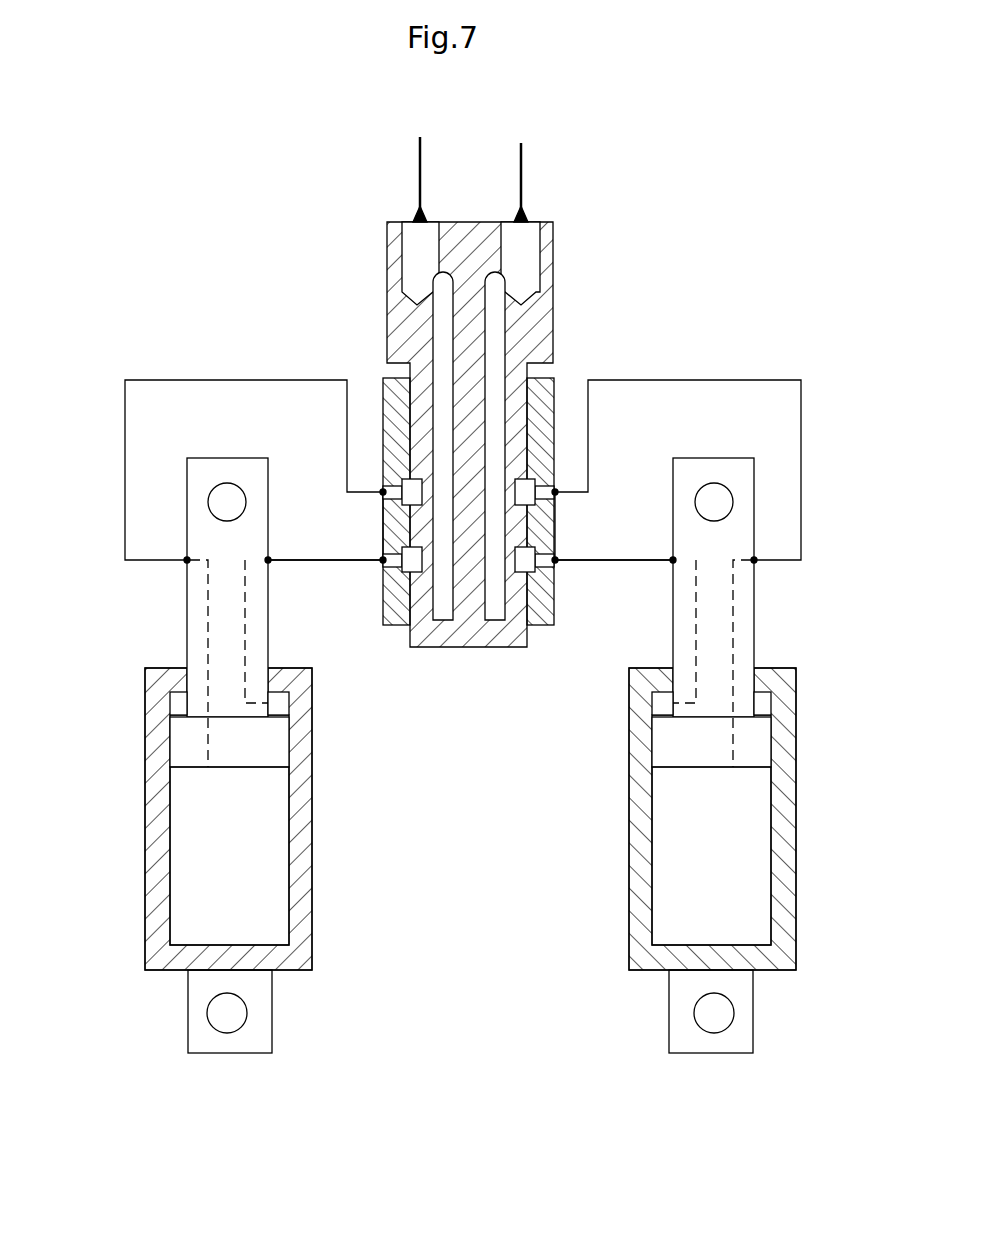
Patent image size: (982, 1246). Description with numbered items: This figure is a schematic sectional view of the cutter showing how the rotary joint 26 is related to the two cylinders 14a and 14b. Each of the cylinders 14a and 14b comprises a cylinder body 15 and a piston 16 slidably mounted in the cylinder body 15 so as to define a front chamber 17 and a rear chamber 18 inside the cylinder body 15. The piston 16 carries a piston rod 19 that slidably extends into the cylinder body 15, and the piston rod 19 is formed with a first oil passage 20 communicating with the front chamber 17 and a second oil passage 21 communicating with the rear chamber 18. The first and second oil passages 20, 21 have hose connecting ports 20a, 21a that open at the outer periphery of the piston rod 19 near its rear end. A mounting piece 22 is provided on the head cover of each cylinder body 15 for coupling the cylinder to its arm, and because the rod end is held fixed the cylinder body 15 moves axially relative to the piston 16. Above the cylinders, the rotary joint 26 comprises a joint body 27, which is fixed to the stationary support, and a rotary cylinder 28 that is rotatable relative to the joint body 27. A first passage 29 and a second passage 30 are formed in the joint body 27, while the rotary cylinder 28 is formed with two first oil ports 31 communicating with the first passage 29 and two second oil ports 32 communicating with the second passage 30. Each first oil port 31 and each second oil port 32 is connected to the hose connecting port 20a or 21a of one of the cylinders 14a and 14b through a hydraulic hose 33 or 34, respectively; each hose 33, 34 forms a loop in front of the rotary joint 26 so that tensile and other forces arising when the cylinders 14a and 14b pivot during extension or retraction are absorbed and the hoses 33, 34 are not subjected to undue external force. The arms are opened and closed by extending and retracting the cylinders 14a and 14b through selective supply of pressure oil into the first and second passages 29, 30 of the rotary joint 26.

The cylinder 14a is at (145, 800).
The cylinder 14b is at (632, 800).
The cylinder body 15 is at (157, 843).
The piston 16 is at (277, 745).
The front chamber 17 is at (185, 893).
The rear chamber 18 is at (183, 703).
The piston rod 19 is at (190, 580).
The first oil passage 20 is at (208, 640).
The hose connecting port 20a is at (187, 560).
The second oil passage 21 is at (245, 603).
The hose connecting port 21a is at (270, 560).
The mounting piece 22 is at (197, 1023).
The rotary joint 26 is at (471, 392).
The joint body 27 is at (420, 358).
The rotary cylinder 28 is at (393, 392).
The first passage 29 is at (443, 292).
The second passage 30 is at (497, 328).
The first oil port 31 is at (383, 492).
The second oil port 32 is at (383, 560).
The hydraulic hose 33 is at (168, 380).
The hydraulic hose 34 is at (318, 560).